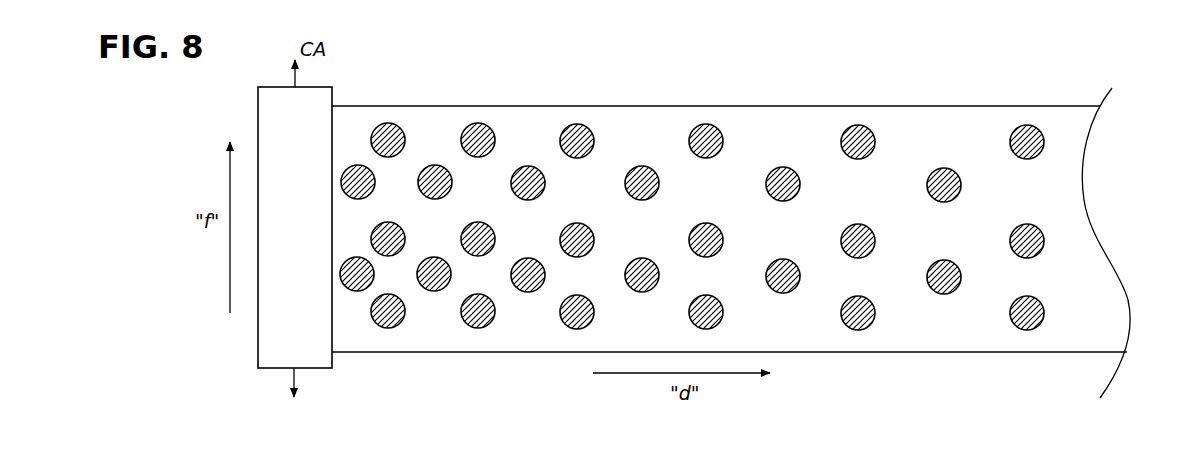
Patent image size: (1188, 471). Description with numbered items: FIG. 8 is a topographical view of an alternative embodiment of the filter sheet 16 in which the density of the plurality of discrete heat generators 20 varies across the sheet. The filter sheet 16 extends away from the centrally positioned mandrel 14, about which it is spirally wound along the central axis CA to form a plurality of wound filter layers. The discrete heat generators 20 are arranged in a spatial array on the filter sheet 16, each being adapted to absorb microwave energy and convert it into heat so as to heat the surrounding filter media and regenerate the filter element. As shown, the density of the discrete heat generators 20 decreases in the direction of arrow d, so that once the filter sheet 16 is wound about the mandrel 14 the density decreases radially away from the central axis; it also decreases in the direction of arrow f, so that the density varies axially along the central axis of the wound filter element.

The mandrel 14 is at (310, 368).
The filter sheet 16 is at (346, 340).
The discrete heat generators 20 is at (390, 130).